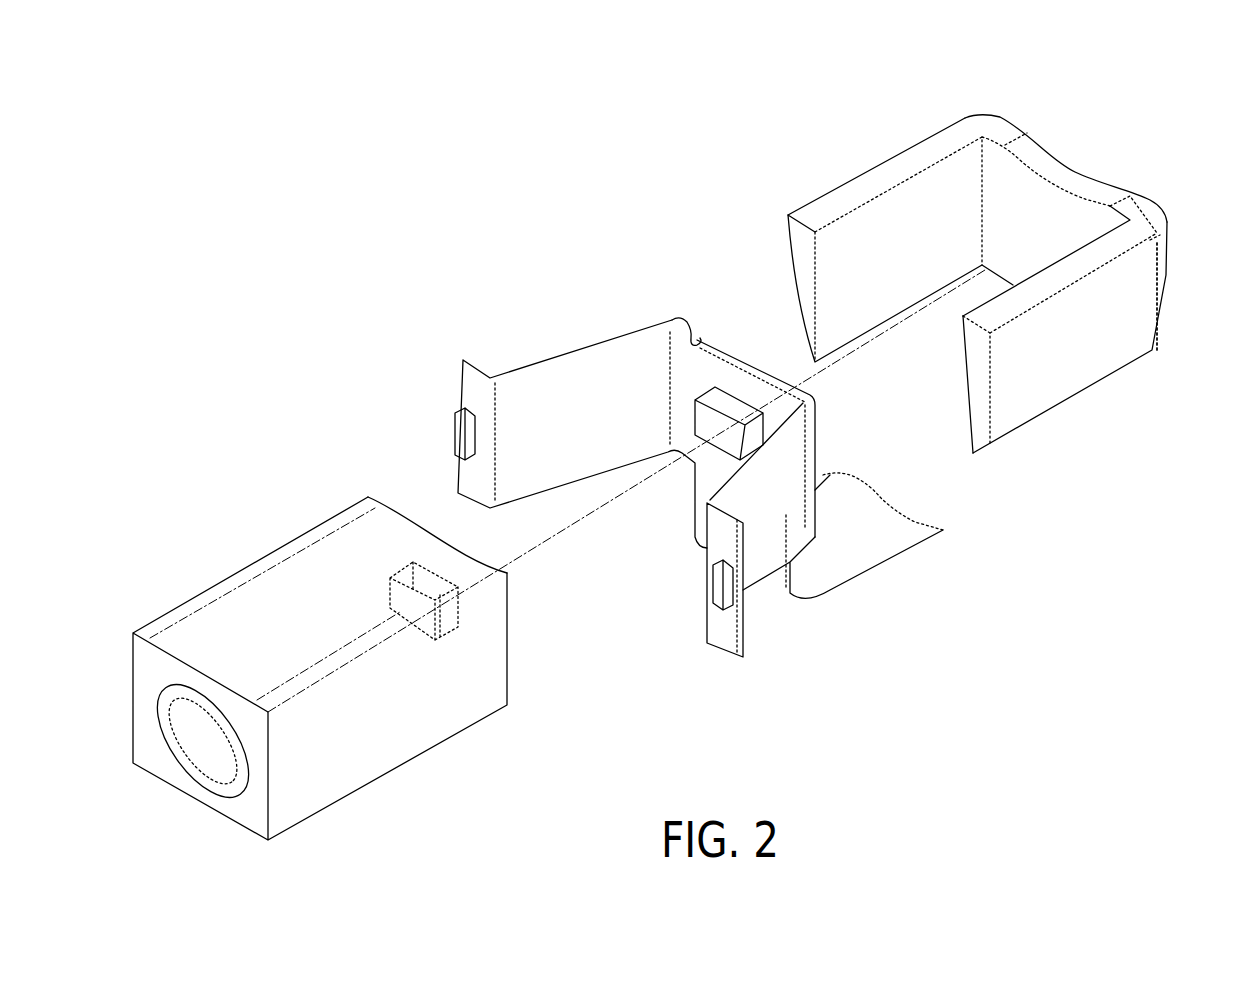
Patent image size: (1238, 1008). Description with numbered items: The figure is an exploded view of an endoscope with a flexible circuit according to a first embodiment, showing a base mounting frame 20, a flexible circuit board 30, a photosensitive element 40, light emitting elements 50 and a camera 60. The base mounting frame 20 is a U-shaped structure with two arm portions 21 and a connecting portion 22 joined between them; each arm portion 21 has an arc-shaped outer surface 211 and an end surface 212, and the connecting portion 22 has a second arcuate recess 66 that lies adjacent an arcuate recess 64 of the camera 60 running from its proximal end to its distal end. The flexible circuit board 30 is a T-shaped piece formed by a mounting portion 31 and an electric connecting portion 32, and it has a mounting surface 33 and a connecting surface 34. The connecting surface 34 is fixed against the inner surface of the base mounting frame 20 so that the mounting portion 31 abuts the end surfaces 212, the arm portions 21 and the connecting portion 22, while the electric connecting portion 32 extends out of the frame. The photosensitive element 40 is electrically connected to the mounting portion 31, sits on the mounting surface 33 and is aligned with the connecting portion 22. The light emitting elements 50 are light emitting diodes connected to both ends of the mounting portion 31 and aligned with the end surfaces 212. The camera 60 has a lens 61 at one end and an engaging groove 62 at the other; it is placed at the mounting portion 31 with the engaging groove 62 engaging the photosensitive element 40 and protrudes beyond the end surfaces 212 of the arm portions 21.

The base mounting frame 20 is at (994, 269).
The arm portion 21 is at (910, 158).
The connecting portion 22 is at (1070, 180).
The second arcuate recess 66 is at (1102, 200).
The arc-shaped outer surface 211 is at (1123, 312).
The end surface 212 is at (977, 378).
The flexible circuit board 30 is at (663, 455).
The mounting portion 31 is at (600, 450).
The electric connecting portion 32 is at (870, 550).
The mounting surface 33 is at (688, 324).
The connecting surface 34 is at (710, 340).
The photosensitive element 40 is at (733, 400).
The light emitting element 50 is at (440, 424).
The camera 60 is at (350, 647).
The lens 61 is at (208, 761).
The engaging groove 62 is at (458, 615).
The arcuate recess 64 is at (348, 576).